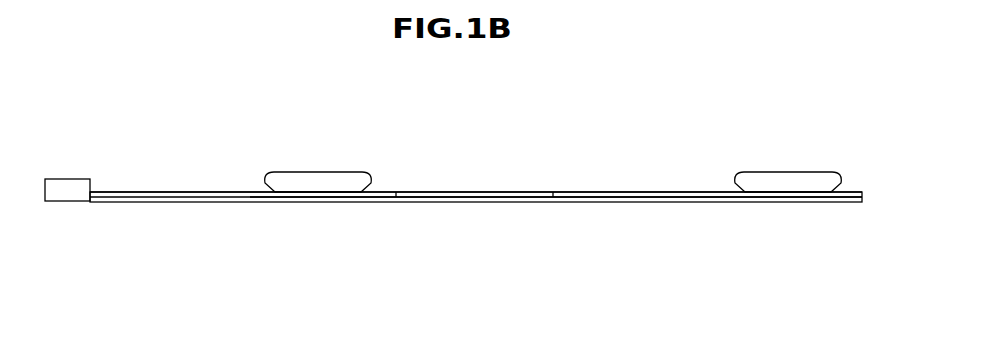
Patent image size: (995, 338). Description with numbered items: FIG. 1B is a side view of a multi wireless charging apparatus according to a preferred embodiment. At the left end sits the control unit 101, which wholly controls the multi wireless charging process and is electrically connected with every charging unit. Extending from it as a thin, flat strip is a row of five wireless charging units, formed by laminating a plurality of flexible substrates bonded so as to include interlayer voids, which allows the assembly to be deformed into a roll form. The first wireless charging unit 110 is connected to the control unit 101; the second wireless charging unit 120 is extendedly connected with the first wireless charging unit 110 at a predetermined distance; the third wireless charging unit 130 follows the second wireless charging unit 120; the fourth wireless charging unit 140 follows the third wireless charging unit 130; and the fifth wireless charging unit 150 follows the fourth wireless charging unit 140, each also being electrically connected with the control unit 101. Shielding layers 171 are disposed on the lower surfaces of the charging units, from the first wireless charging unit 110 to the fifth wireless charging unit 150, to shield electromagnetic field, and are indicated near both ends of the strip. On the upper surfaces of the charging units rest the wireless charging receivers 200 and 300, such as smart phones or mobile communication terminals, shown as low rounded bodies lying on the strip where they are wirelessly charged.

The control unit 101 is at (64, 188).
The first wireless charging unit 110 is at (143, 209).
The second wireless charging unit 120 is at (328, 209).
The third wireless charging unit 130 is at (510, 209).
The fourth wireless charging unit 140 is at (643, 209).
The fifth wireless charging unit 150 is at (778, 209).
The shielding layer 171 is at (198, 205).
The wireless charging receiver 200 is at (316, 186).
The wireless charging receiver 300 is at (796, 186).